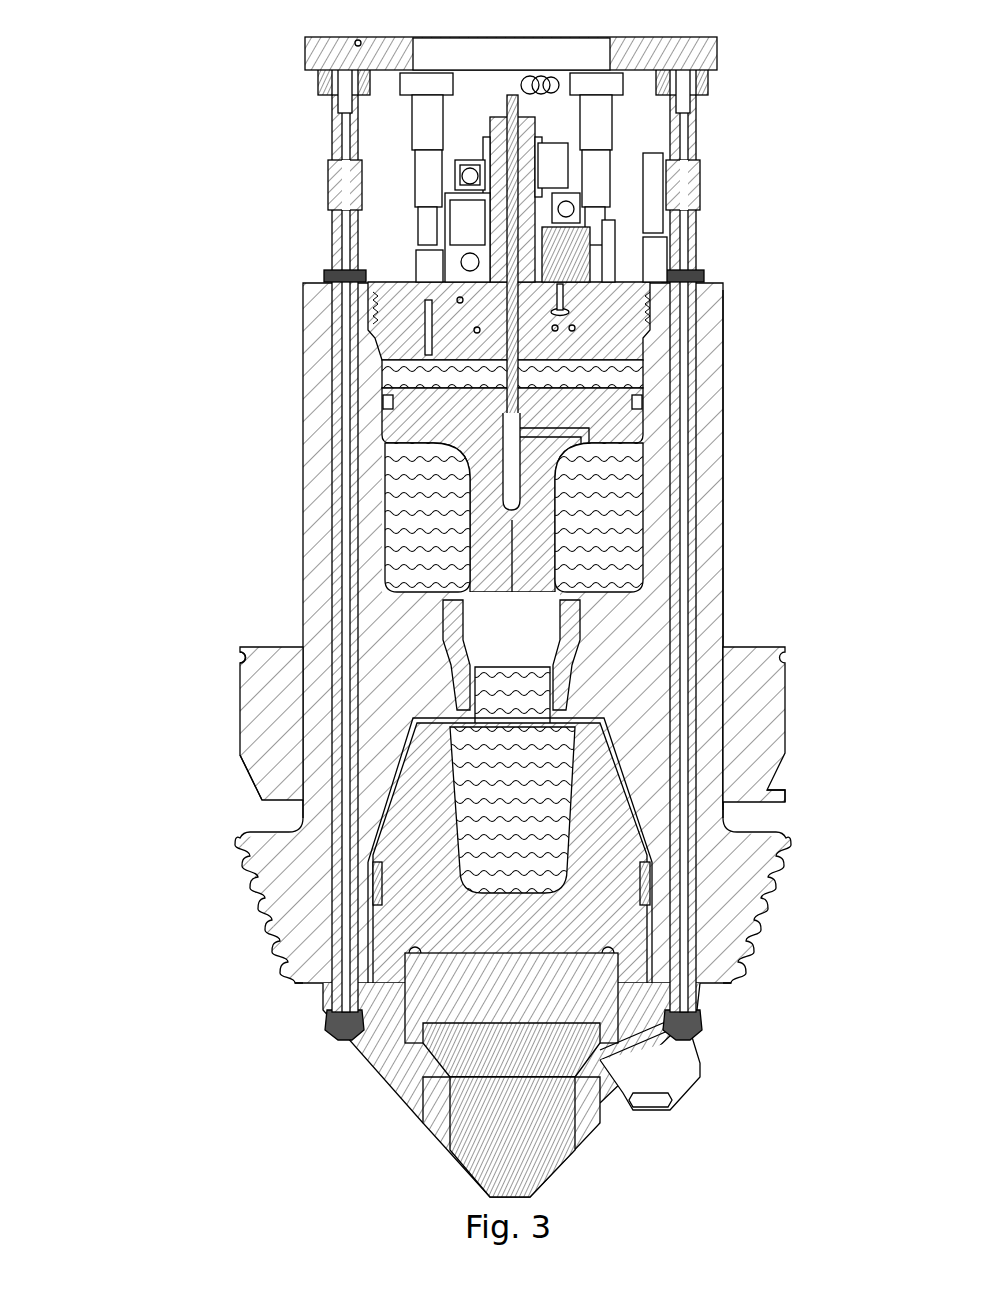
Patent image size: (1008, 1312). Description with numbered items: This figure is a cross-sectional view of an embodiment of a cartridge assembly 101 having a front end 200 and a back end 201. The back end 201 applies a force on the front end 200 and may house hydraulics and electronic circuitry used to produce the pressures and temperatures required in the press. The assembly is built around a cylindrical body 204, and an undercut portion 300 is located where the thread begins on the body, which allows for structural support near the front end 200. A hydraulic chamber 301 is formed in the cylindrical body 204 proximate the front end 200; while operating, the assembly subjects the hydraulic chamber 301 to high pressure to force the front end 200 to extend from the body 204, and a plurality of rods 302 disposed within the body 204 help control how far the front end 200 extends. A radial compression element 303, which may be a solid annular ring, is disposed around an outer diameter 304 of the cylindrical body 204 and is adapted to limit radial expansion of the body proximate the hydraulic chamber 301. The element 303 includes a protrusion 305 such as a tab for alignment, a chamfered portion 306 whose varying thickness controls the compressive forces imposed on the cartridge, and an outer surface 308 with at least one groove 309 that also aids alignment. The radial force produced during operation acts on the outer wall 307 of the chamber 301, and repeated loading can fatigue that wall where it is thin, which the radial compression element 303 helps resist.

The cartridge assembly 101 is at (155, 48).
The front end 200 is at (822, 928).
The back end 201 is at (807, 145).
The cylindrical body 204 is at (503, 633).
The undercut portion 300 is at (280, 830).
The hydraulic chamber 301 is at (643, 805).
The rods 302 is at (345, 405).
The radial compression element 303 is at (770, 697).
The outer diameter 304 is at (722, 490).
The protrusion 305 is at (783, 795).
The chamfered portion 306 is at (248, 783).
The outer wall 307 is at (383, 720).
The outer surface 308 is at (240, 724).
The groove 309 is at (222, 656).